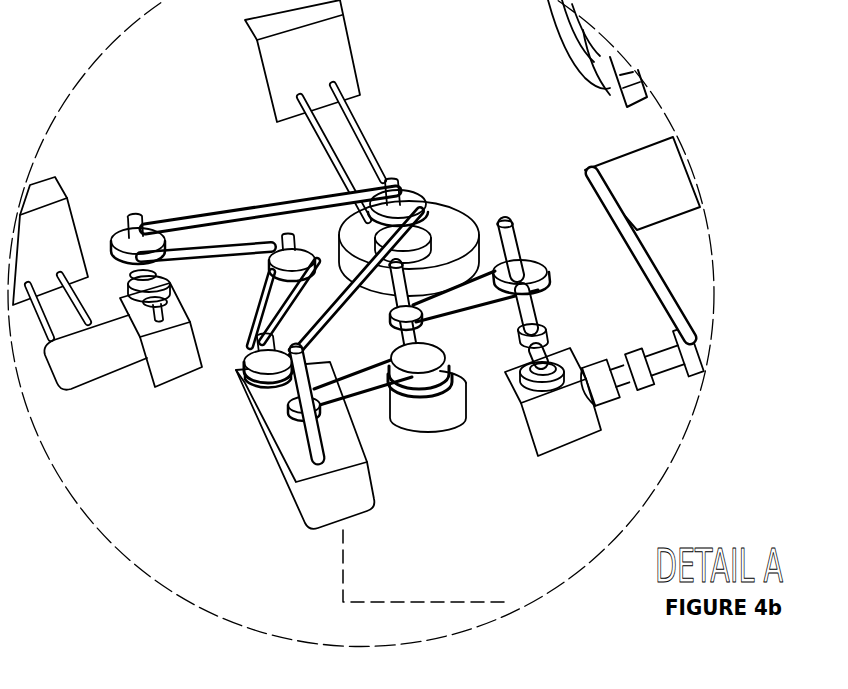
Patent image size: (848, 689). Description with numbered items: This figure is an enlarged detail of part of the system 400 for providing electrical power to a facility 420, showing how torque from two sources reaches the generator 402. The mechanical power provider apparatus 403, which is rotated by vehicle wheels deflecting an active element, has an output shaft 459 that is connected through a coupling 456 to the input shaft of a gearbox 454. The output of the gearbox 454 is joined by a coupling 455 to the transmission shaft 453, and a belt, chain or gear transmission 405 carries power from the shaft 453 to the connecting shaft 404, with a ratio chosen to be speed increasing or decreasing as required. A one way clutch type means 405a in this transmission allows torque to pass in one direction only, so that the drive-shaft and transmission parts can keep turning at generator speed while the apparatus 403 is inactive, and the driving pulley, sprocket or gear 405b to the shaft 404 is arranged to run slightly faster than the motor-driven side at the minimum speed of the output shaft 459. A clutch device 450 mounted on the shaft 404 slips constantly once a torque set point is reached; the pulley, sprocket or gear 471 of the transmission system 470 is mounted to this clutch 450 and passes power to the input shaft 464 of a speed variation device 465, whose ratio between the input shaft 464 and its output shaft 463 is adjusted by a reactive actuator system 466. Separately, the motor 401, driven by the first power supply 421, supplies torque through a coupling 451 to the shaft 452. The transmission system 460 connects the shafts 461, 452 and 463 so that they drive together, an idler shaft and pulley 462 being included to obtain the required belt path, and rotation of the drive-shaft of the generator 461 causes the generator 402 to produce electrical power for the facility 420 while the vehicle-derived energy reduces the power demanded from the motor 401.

The system 400 is at (52, 1).
The motor 401 is at (153, 387).
The generator 402 is at (448, 207).
The mechanical power provider apparatus 403 is at (607, 160).
The connecting shaft 404 is at (422, 333).
The transmission 405 is at (487, 267).
The one way clutch type means 405a is at (525, 265).
The driving pulley, sprocket or gear 405b is at (393, 328).
The facility 420 is at (256, 78).
The first power supply 421 is at (65, 192).
The clutch device 450 is at (437, 430).
The coupling 451 is at (170, 288).
The shaft 452 is at (140, 220).
The transmission shaft 453 is at (521, 230).
The gearbox 454 is at (553, 453).
The coupling 455 is at (542, 325).
The coupling 456 is at (630, 353).
The output shaft 459 is at (670, 373).
The transmission system 460 is at (208, 213).
The drive-shaft of the generator 461 is at (390, 182).
The idler shaft and pulley 462 is at (289, 235).
The output shaft 463 is at (240, 405).
The input shaft 464 is at (267, 482).
The speed variation device 465 is at (263, 453).
The reactive actuator system 466 is at (340, 572).
The transmission system 470 is at (353, 408).
The pulley, sprocket or gear 471 is at (448, 387).